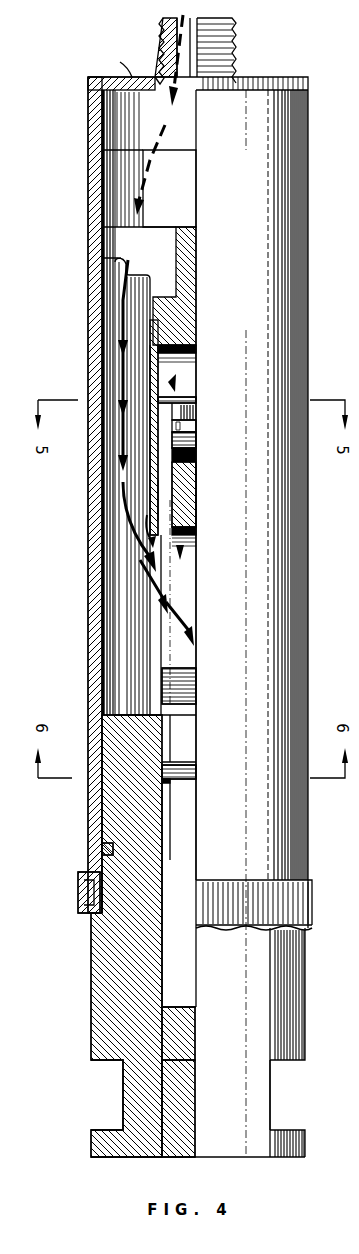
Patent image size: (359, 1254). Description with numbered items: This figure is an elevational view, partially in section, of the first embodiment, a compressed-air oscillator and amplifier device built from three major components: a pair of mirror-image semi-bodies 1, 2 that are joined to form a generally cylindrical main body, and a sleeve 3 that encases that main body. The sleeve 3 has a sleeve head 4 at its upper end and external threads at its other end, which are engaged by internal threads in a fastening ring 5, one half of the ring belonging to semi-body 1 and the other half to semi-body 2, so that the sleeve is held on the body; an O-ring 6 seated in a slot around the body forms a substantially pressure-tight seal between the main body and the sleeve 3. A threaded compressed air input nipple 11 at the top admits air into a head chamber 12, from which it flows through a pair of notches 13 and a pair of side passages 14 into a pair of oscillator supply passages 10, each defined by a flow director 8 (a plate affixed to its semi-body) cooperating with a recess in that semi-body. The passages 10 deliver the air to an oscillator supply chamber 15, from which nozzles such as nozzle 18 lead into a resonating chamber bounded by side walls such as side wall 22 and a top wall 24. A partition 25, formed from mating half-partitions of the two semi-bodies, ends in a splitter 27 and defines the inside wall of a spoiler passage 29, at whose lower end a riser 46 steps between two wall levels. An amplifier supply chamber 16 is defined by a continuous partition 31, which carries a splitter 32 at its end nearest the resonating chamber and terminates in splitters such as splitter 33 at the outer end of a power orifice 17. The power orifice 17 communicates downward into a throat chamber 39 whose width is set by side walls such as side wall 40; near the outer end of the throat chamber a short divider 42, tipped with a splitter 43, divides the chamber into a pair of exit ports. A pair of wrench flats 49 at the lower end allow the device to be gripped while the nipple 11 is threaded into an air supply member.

The semi-body 1 is at (100, 968).
The semi-body 2 is at (298, 1060).
The sleeve 3 is at (283, 580).
The sleeve head 4 is at (126, 59).
The fastening ring 5 is at (84, 894).
The O-ring 6 is at (102, 847).
The flow director 8 is at (158, 496).
The oscillator supply passage 10 is at (158, 486).
The compressed air input nipple 11 is at (164, 26).
The head chamber 12 is at (162, 189).
The notch 13 is at (120, 247).
The side passage 14 is at (120, 315).
The oscillator supply chamber 15 is at (178, 352).
The amplifier supply chamber 16 is at (180, 666).
The power orifice 17 is at (173, 736).
The nozzle 18 is at (190, 415).
The side wall 22 is at (196, 426).
The top wall 24 is at (185, 400).
The partition 25 is at (190, 455).
The splitter 27 is at (185, 436).
The spoiler passage 29 is at (188, 834).
The partition 31 is at (186, 528).
The splitter 32 is at (190, 475).
The splitter 33 is at (186, 754).
The throat chamber 39 is at (164, 926).
The side wall 40 is at (182, 986).
The divider 42 is at (185, 1090).
The splitter 43 is at (190, 1026).
The riser 46 is at (170, 810).
The wrench flat 49 is at (122, 1090).